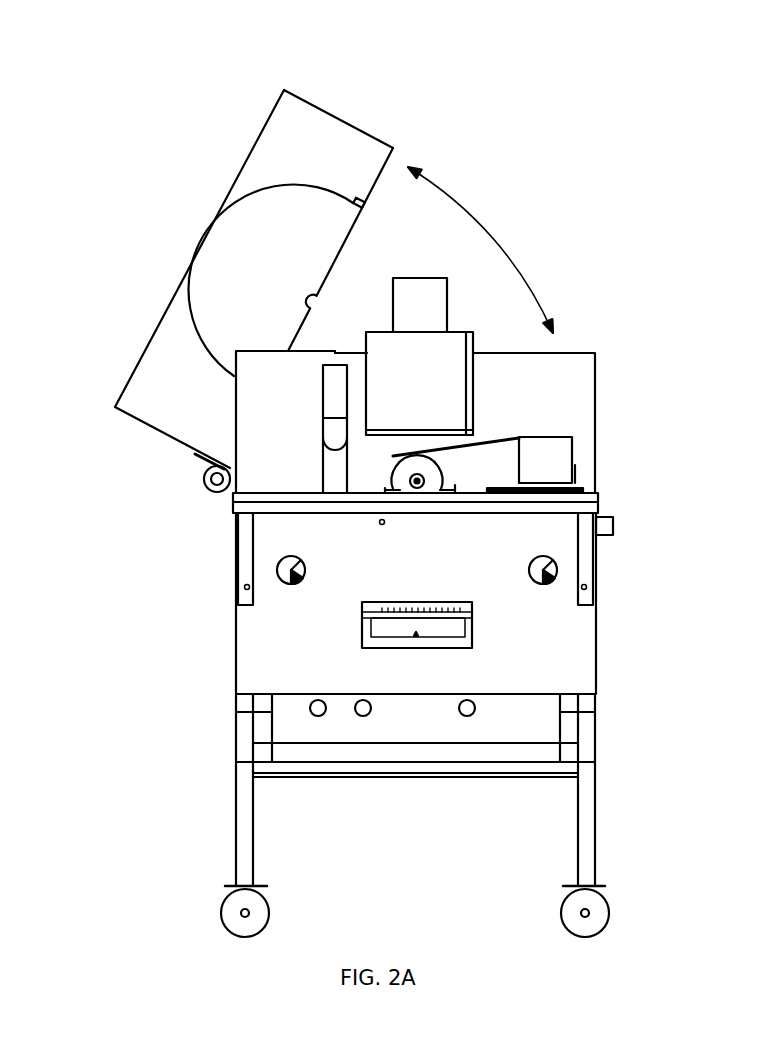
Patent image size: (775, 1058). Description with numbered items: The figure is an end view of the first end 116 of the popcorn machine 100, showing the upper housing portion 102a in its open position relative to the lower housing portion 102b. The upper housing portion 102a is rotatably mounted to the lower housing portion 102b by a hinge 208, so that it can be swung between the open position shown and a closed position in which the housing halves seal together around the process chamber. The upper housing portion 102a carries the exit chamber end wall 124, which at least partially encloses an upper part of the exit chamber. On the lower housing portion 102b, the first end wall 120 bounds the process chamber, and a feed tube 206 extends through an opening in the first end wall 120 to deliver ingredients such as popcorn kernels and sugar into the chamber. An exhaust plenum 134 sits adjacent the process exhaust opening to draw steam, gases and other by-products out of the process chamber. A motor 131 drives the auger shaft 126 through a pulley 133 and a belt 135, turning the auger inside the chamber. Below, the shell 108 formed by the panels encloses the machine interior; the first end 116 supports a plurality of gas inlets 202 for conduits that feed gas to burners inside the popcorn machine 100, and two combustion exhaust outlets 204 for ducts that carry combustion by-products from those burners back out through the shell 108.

The popcorn machine 100 is at (513, 158).
The upper housing portion 102a is at (347, 122).
The lower housing portion 102b is at (597, 576).
The shell 108 is at (583, 642).
The first end 116 is at (252, 673).
The first end wall 120 is at (519, 366).
The exit chamber end wall 124 is at (340, 234).
The auger shaft 126 is at (417, 485).
The motor 131 is at (545, 436).
The pulley 133 is at (402, 478).
The exhaust plenum 134 is at (455, 331).
The belt 135 is at (503, 440).
The gas inlets 202 is at (318, 716).
The combustion exhaust outlets 204 is at (291, 585).
The feed tube 206 is at (322, 466).
The hinge 208 is at (205, 489).